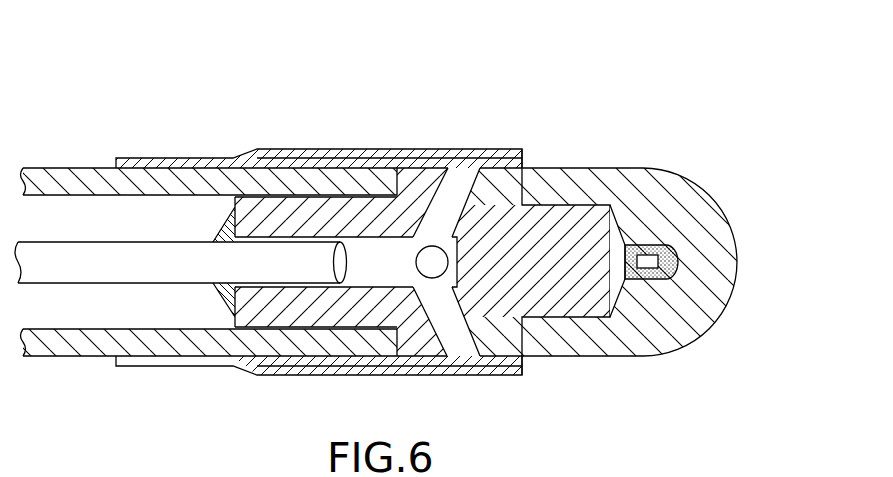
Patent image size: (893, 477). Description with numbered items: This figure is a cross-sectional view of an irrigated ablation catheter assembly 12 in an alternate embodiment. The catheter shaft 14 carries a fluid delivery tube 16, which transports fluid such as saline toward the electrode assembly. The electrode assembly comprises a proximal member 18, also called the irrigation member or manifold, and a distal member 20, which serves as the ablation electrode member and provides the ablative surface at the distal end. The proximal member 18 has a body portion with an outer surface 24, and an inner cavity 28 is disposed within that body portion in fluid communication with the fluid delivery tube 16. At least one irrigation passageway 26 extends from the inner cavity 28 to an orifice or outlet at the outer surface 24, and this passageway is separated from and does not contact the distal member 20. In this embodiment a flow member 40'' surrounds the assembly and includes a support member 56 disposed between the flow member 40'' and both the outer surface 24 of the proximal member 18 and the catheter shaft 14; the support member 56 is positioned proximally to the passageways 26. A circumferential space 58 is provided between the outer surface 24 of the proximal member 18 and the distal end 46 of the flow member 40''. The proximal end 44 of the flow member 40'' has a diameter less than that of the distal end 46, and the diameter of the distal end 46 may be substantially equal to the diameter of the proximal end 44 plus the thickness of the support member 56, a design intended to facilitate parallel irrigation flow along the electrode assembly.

The irrigated ablation catheter assembly 12 is at (260, 91).
The catheter shaft 14 is at (85, 170).
The fluid delivery tube 16 is at (100, 265).
The proximal member 18 is at (498, 326).
The distal member 20 is at (700, 175).
The outer surface 24 is at (523, 172).
The irrigation passageway 26 is at (465, 170).
The inner cavity 28 is at (358, 267).
The flow member 40'' is at (333, 198).
The proximal end 44 is at (148, 165).
The distal end 46 is at (520, 155).
The support member 56 is at (408, 148).
The circumferential space 58 is at (483, 150).